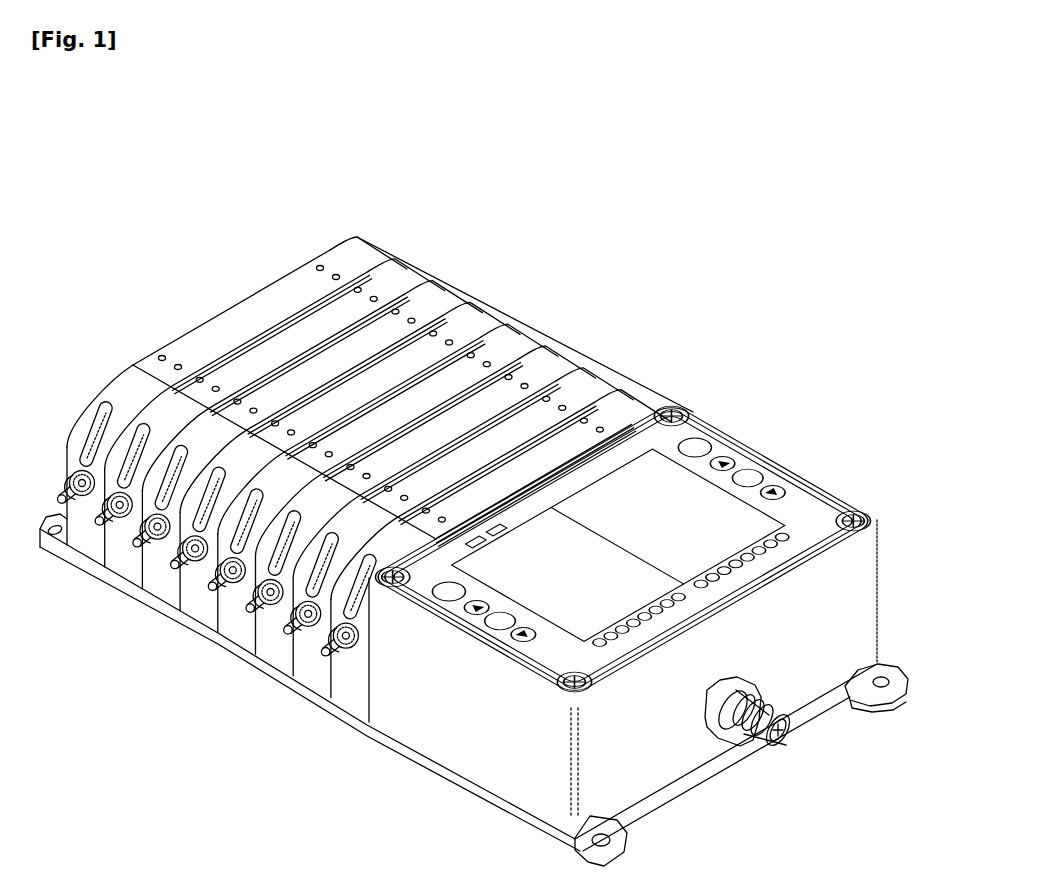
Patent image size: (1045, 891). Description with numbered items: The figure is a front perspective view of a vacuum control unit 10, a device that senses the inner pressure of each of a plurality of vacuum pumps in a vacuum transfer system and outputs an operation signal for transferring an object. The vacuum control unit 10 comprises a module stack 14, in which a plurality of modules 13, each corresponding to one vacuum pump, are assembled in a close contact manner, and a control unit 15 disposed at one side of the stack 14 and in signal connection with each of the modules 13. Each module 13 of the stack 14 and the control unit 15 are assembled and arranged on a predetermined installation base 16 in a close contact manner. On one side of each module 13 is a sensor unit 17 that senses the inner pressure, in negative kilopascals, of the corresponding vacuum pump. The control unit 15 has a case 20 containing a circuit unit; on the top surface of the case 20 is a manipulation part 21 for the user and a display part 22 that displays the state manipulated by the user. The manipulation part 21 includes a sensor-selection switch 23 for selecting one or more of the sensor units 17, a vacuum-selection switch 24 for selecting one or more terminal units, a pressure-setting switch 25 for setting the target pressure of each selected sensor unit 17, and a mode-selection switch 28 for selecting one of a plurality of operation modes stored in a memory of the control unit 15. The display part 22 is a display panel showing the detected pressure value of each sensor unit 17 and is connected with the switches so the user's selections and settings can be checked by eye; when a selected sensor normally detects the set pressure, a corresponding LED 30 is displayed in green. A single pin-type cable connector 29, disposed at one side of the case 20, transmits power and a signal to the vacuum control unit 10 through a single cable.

The vacuum control unit 10 is at (611, 145).
The module 13 is at (518, 342).
The module stack 14 is at (385, 457).
The control unit 15 is at (630, 628).
The installation base 16 is at (715, 773).
The sensor unit 17 is at (183, 563).
The case 20 is at (748, 437).
The manipulation part 21 is at (800, 505).
The display part 22 is at (697, 553).
The sensor-selection switch 23 is at (497, 628).
The vacuum-selection switch 24 is at (757, 478).
The pressure-setting switch 25 is at (467, 614).
The mode-selection switch 28 is at (704, 442).
The pin-type cable connector 29 is at (788, 741).
The LED 30 is at (818, 533).